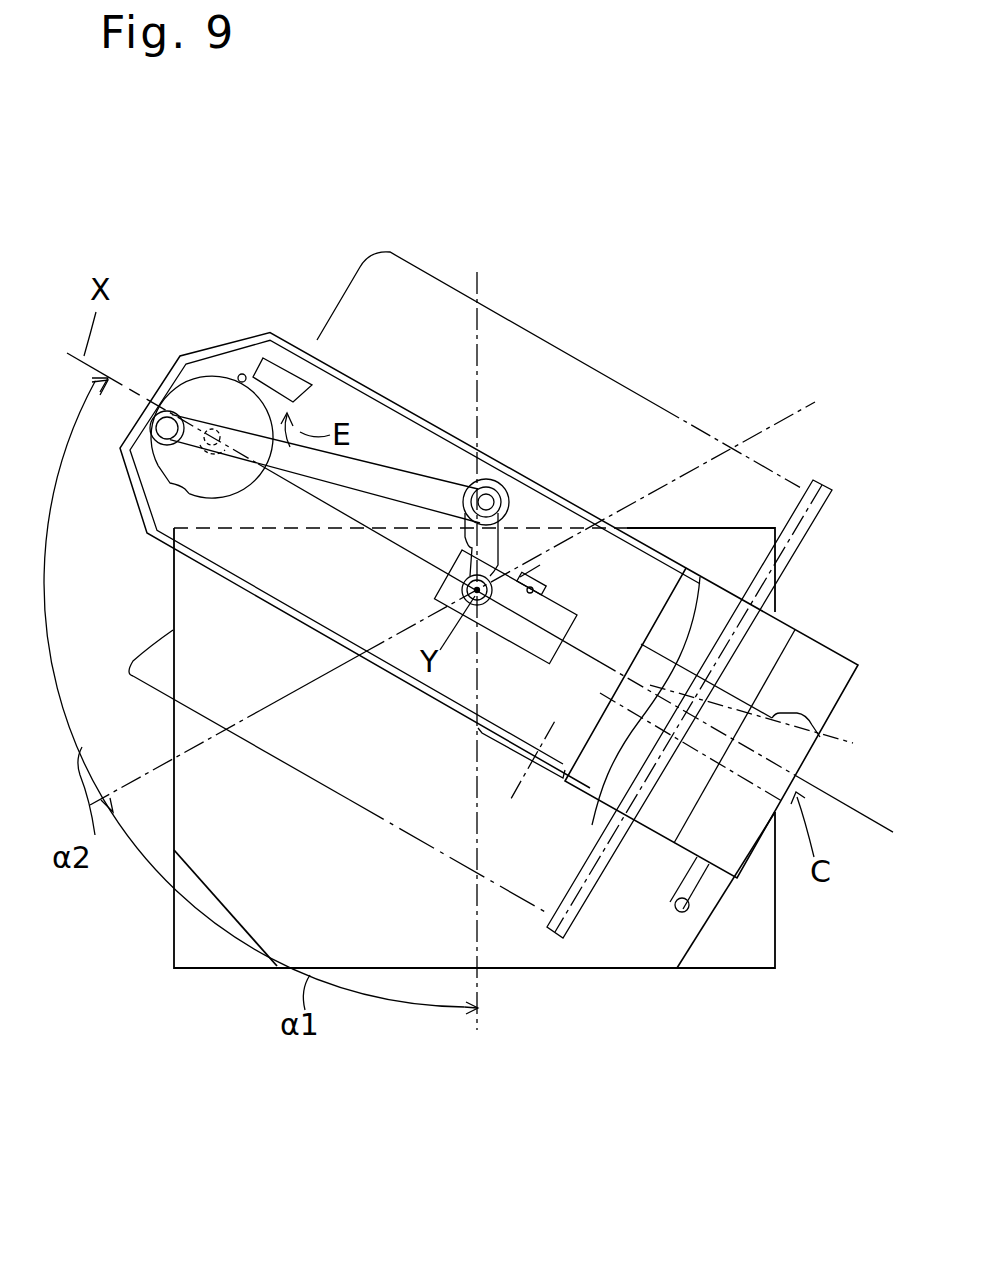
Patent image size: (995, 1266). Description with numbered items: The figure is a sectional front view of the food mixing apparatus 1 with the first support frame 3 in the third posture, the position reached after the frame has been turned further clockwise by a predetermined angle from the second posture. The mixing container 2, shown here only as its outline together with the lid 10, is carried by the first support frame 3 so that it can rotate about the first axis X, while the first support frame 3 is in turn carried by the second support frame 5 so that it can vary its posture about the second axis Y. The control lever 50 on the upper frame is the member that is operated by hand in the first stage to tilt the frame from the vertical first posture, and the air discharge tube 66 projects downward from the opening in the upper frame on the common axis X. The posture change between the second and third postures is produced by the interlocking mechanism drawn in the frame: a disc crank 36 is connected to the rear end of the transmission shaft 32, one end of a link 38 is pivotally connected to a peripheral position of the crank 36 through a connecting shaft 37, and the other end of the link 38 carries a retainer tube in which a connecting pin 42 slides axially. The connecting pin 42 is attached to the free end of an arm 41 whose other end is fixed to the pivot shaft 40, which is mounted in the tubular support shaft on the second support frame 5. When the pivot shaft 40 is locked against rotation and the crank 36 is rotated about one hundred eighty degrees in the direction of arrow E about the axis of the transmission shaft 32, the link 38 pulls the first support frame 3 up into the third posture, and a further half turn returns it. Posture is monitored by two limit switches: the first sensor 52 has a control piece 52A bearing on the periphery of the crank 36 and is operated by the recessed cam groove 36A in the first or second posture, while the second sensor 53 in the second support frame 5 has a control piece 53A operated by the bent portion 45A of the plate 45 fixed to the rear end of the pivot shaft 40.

The food mixing apparatus 1 is at (708, 288).
The mixing container 2 is at (568, 354).
The first support frame 3 is at (820, 636).
The second support frame 5 is at (583, 974).
The lid 10 is at (792, 517).
The transmission shaft 32 is at (240, 453).
The disc crank 36 is at (200, 393).
The recessed cam groove 36A is at (156, 542).
The connecting shaft 37 is at (158, 442).
The link 38 is at (398, 482).
The pivot shaft 40 is at (467, 590).
The arm 41 is at (495, 548).
The connecting pin 42 is at (488, 500).
The plate 45 is at (470, 713).
The bent portion 45A is at (532, 578).
The control lever 50 is at (683, 913).
The first sensor 52 is at (285, 375).
The control piece 52A is at (242, 374).
The second sensor 53 is at (553, 633).
The control piece 53A is at (545, 596).
The air discharge tube 66 is at (770, 723).